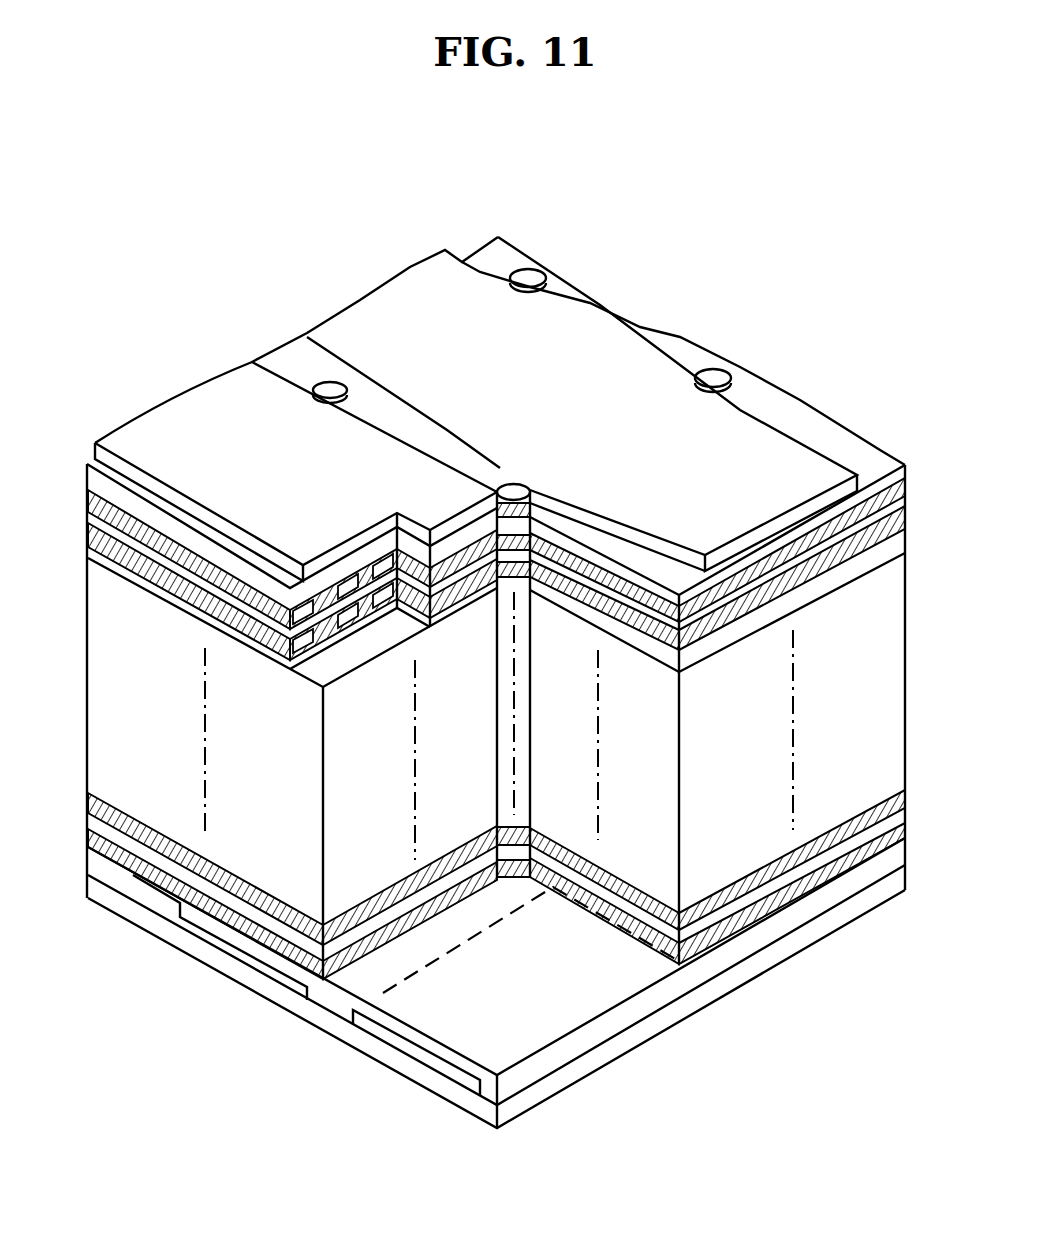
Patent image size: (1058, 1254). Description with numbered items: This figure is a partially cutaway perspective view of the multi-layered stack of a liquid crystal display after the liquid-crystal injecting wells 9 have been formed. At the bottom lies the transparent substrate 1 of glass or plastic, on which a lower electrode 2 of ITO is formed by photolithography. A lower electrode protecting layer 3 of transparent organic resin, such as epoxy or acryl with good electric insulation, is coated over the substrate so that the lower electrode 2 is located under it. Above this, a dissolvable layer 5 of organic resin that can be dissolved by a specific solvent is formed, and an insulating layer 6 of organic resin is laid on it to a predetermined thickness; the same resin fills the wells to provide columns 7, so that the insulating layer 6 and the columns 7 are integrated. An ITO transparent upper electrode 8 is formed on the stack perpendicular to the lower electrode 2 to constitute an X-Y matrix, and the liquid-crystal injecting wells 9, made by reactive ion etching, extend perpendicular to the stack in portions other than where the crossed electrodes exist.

The transparent substrate 1 is at (423, 1077).
The lower electrode 2 is at (370, 1027).
The lower electrode protecting layer 3 is at (215, 887).
The dissolvable layer 5 is at (270, 933).
The insulating layer 6 is at (250, 377).
The columns 7 is at (305, 650).
The upper electrode 8 is at (123, 443).
The liquid-crystal injecting wells 9 is at (328, 385).